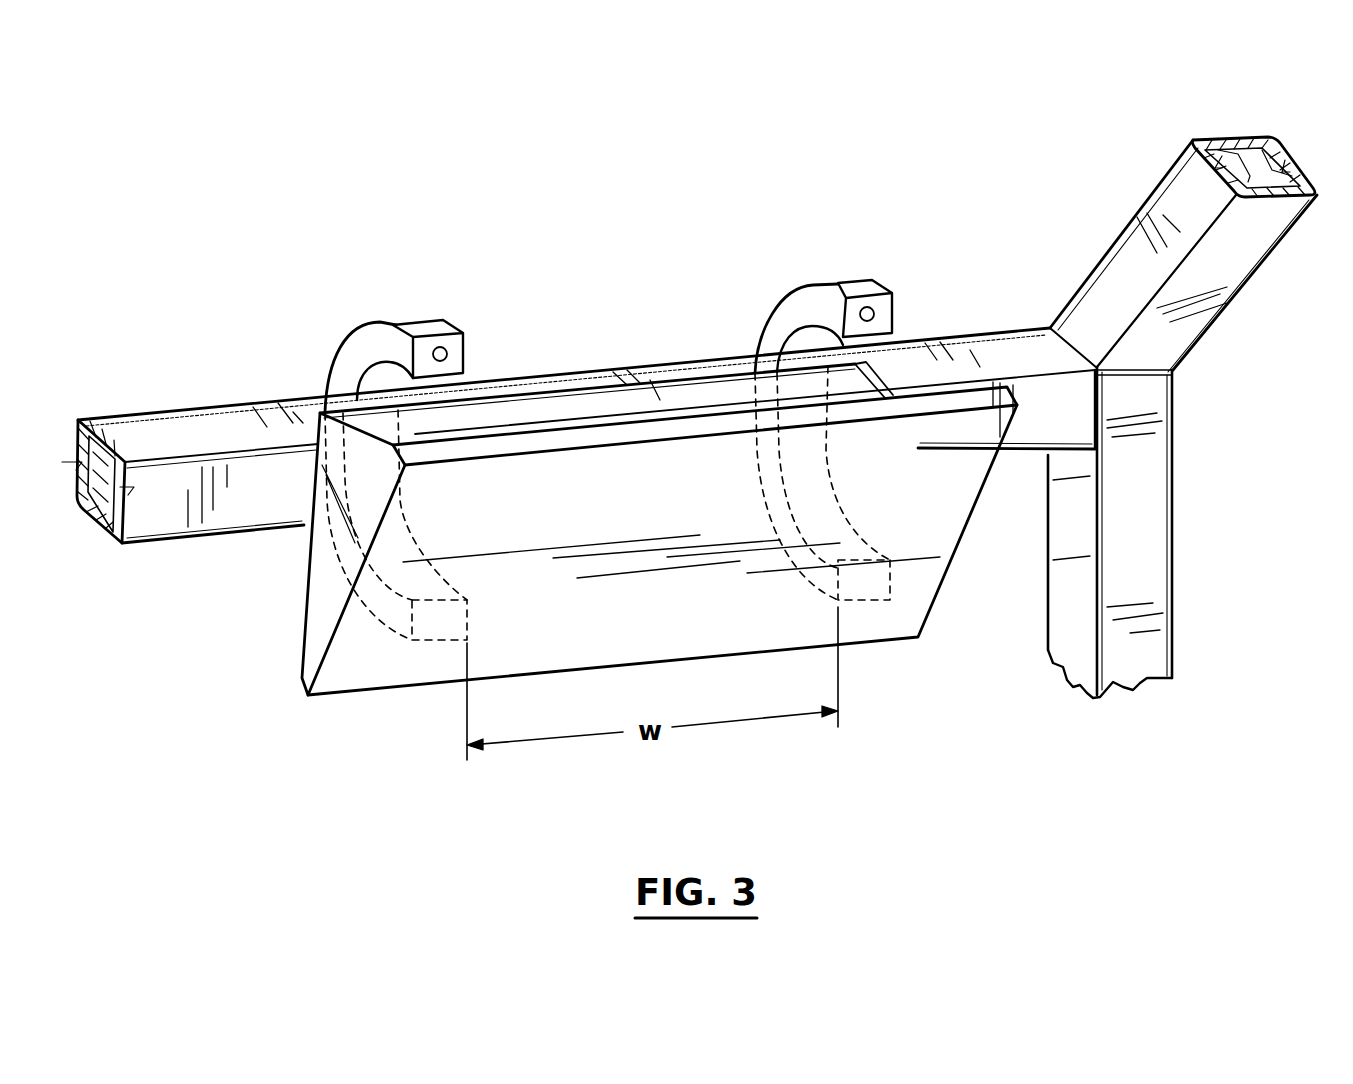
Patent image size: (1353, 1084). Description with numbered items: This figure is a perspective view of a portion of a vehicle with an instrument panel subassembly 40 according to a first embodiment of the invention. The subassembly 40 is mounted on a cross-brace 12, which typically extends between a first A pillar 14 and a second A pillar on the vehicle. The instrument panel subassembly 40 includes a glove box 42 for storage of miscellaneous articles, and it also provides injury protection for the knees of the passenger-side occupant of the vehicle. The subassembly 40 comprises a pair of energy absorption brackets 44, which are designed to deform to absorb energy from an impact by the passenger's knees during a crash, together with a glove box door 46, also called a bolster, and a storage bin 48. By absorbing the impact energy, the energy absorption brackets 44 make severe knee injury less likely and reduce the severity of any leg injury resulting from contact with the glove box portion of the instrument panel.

The cross-brace 12 is at (140, 408).
The first A pillar 14 is at (1133, 220).
The instrument panel subassembly 40 is at (605, 431).
The glove box 42 is at (308, 368).
The energy absorption brackets 44 is at (395, 324).
The glove box door 46 is at (938, 600).
The storage bin 48 is at (313, 583).